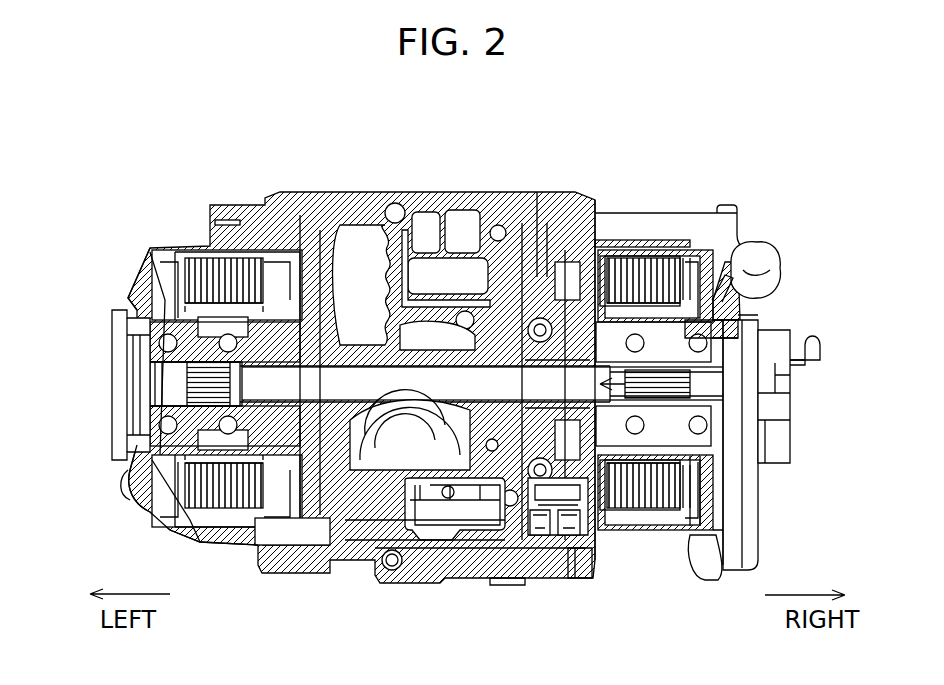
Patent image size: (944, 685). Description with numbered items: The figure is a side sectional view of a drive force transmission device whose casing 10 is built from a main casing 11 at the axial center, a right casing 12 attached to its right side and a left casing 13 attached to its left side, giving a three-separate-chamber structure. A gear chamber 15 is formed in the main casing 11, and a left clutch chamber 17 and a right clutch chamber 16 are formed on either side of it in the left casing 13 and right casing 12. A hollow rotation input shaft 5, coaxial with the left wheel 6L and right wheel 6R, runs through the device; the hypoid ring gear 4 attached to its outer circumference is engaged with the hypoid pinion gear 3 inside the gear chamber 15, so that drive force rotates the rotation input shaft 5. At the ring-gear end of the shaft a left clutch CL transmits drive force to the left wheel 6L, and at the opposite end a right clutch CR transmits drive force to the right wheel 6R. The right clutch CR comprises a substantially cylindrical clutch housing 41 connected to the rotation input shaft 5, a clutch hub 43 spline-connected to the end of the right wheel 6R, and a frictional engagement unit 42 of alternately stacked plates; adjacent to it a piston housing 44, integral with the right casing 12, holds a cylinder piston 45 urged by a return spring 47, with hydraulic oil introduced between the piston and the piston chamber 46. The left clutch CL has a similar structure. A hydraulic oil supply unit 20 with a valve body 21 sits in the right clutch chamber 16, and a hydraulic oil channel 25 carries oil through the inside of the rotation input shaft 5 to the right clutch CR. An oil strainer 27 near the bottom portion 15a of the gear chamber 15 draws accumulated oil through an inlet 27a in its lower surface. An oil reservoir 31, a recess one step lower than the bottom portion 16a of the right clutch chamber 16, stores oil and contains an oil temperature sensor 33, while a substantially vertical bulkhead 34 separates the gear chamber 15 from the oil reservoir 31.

The hypoid pinion gear 3 is at (440, 330).
The hypoid ring gear 4 is at (345, 222).
The rotation input shaft 5 is at (423, 365).
The casing 10 is at (472, 580).
The main casing 11 is at (500, 585).
The right casing 12 is at (700, 560).
The left casing 13 is at (176, 530).
The gear chamber 15 is at (432, 548).
The bottom portion of the gear chamber 15a is at (333, 560).
The right clutch chamber 16 is at (625, 520).
The bottom portion of the right clutch chamber 16a is at (656, 520).
The left clutch chamber 17 is at (252, 520).
The hydraulic oil supply unit 20 is at (584, 331).
The valve body 21 is at (592, 290).
The hydraulic oil channel 25 is at (680, 390).
The oil strainer 27 is at (363, 542).
The inlet 27a is at (400, 585).
The oil reservoir 31 is at (597, 540).
The oil temperature sensor 33 is at (562, 560).
The bulkhead 34 is at (533, 560).
The clutch housing 41 is at (637, 252).
The frictional engagement unit 42 is at (683, 252).
The clutch hub 43 is at (755, 340).
The piston housing 44 is at (730, 272).
The cylinder piston 45 is at (745, 300).
The piston chamber 46 is at (738, 262).
The return spring 47 is at (765, 320).
The left clutch CL is at (235, 252).
The right clutch CR is at (660, 252).
The left wheel 6L is at (122, 340).
The right wheel 6R is at (748, 357).